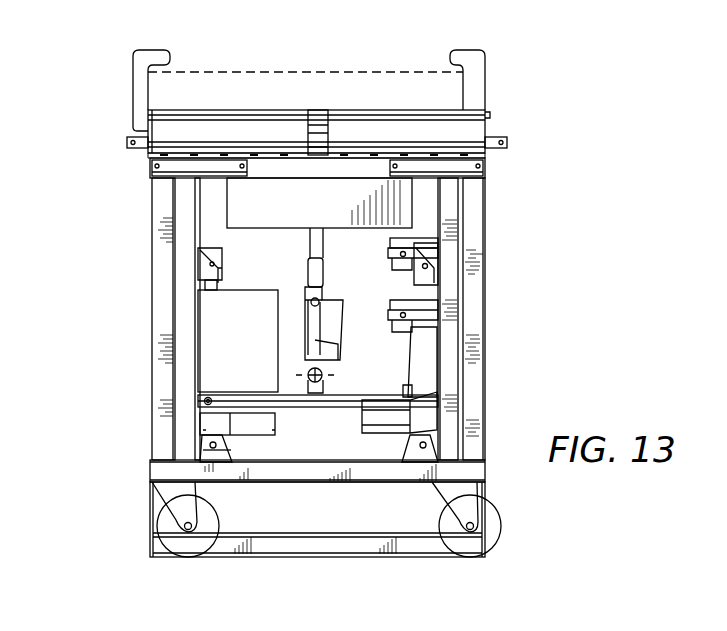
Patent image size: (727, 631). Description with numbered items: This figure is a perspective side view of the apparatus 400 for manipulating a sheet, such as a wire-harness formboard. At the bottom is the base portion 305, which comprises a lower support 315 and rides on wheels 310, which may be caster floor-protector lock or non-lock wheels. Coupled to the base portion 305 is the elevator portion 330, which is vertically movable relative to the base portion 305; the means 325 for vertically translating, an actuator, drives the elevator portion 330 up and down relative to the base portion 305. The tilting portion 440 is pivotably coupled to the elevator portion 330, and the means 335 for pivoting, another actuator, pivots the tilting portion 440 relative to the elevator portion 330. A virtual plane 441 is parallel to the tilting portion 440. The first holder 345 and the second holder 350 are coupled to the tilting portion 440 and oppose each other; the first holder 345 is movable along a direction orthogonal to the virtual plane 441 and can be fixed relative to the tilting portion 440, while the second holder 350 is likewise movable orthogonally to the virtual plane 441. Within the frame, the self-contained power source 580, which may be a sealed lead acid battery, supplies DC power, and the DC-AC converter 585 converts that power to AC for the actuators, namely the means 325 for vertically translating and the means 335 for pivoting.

The apparatus 400 is at (560, 527).
The virtual plane 441 is at (348, 72).
The first holder 345 is at (140, 80).
The second holder 350 is at (478, 80).
The tilting portion 440 is at (473, 133).
The base portion 305 is at (163, 318).
The elevator portion 330 is at (190, 250).
The DC-AC converter 585 is at (287, 218).
The means for pivoting 335 is at (322, 315).
The self-contained power source 580 is at (213, 375).
The lower support 315 is at (312, 543).
The means for vertically translating 325 is at (422, 359).
The wheels 310 is at (190, 545).